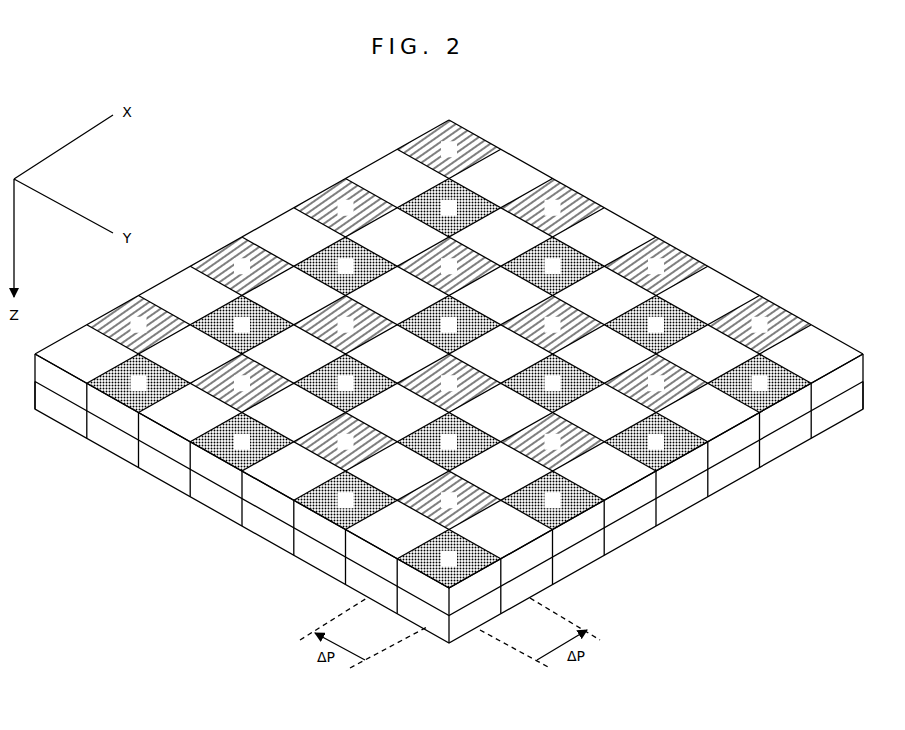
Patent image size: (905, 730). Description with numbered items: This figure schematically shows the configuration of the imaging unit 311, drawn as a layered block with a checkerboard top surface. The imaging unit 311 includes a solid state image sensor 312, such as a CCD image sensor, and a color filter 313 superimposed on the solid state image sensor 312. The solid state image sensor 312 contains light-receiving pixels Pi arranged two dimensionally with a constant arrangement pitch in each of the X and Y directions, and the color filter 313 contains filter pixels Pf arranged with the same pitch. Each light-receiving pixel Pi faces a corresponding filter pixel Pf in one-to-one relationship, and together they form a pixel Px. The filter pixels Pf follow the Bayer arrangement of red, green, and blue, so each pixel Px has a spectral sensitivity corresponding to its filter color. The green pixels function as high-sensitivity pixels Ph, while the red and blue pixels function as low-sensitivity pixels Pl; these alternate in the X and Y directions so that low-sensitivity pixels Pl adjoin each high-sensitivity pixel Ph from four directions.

The imaging unit 311 is at (449, 381).
The solid state image sensor 312 is at (190, 482).
The color filter 313 is at (137, 428).
The high-sensitivity pixel Ph is at (770, 487).
The low-sensitivity pixel Pl is at (818, 457).
The filter pixel Pf is at (530, 558).
The light-receiving pixel Pi is at (530, 587).
The pixel Px is at (270, 576).